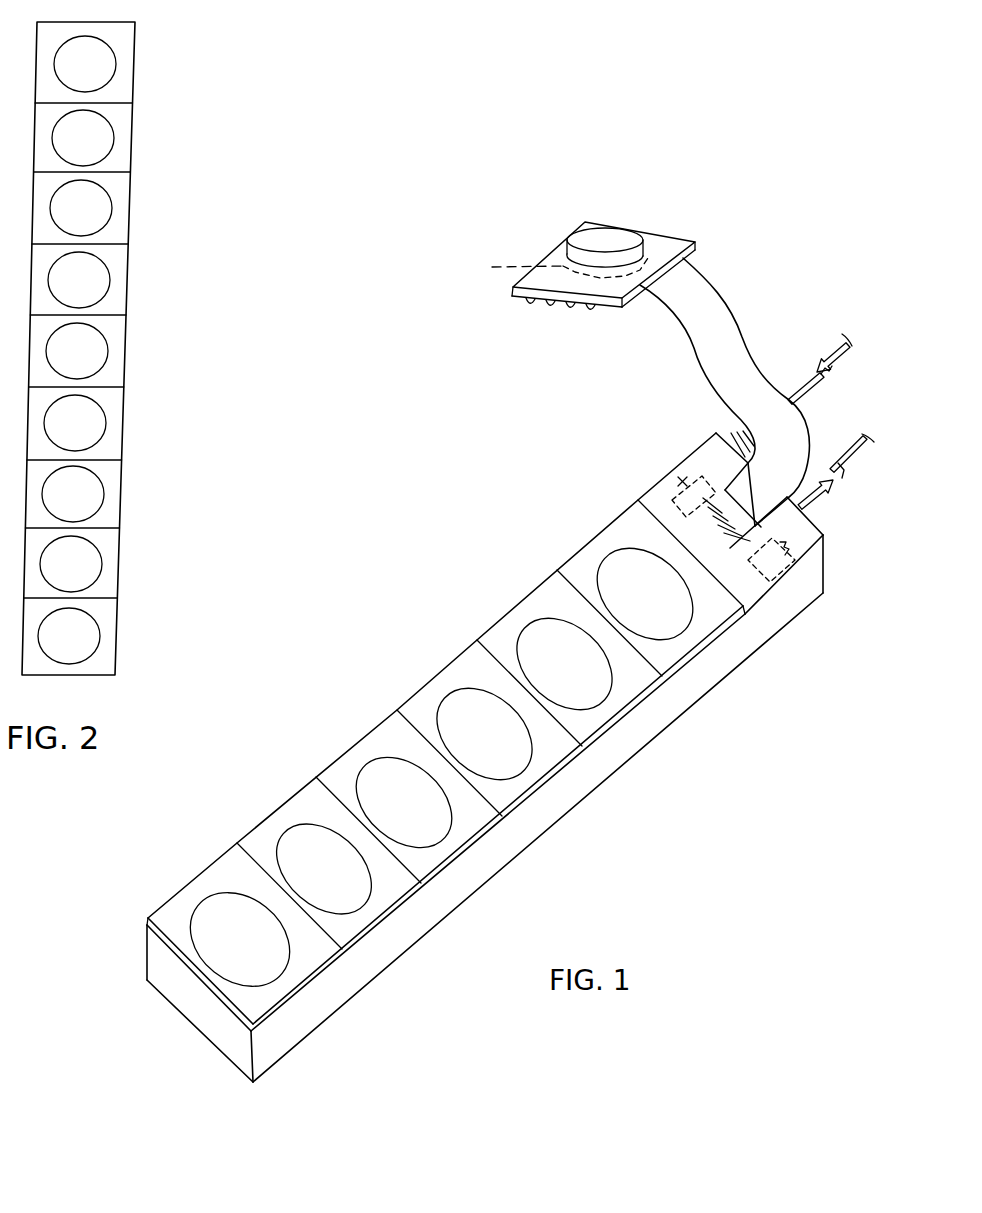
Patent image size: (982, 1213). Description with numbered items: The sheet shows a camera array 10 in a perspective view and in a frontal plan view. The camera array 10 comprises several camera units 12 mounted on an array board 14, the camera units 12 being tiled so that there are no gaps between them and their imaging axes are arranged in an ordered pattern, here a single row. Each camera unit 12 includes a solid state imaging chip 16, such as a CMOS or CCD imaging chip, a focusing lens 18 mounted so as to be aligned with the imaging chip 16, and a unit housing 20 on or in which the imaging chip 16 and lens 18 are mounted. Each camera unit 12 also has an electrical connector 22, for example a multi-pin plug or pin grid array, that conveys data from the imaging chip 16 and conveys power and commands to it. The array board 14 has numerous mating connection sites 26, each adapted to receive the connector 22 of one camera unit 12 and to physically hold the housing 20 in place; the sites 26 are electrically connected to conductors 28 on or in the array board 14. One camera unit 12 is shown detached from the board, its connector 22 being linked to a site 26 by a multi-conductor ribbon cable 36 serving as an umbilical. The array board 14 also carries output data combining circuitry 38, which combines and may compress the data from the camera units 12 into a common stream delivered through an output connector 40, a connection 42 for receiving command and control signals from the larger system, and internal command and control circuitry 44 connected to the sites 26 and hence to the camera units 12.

In FIG. 2, the camera array 10 is at (153, 284).
In FIG. 2, the camera unit 12 is at (140, 140).
In FIG. 1, the camera unit 12 is at (603, 719).
In FIG. 1, the array board 14 is at (513, 847).
In FIG. 1, the solid state imaging chip 16 is at (552, 264).
In FIG. 1, the focusing lens 18 is at (616, 236).
In FIG. 1, the unit housing 20 is at (693, 253).
In FIG. 1, the electrical connector 22 is at (548, 302).
In FIG. 1, the mating connection site 26 is at (689, 519).
In FIG. 1, the conductors 28 is at (733, 549).
In FIG. 1, the multi-conductor ribbon cable 36 is at (734, 308).
In FIG. 1, the output data combining circuitry 38 is at (797, 543).
In FIG. 1, the output connector 40 is at (816, 499).
In FIG. 1, the command and control connection 42 is at (797, 394).
In FIG. 1, the internal command and control circuitry 44 is at (674, 462).